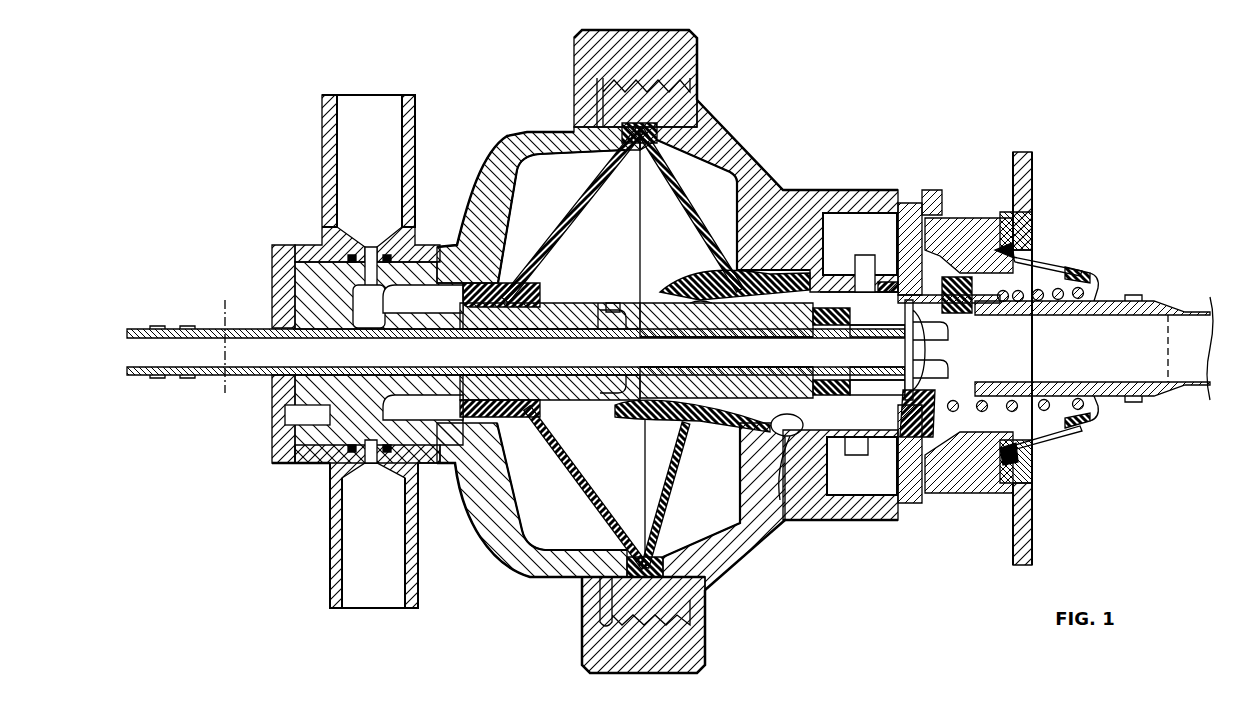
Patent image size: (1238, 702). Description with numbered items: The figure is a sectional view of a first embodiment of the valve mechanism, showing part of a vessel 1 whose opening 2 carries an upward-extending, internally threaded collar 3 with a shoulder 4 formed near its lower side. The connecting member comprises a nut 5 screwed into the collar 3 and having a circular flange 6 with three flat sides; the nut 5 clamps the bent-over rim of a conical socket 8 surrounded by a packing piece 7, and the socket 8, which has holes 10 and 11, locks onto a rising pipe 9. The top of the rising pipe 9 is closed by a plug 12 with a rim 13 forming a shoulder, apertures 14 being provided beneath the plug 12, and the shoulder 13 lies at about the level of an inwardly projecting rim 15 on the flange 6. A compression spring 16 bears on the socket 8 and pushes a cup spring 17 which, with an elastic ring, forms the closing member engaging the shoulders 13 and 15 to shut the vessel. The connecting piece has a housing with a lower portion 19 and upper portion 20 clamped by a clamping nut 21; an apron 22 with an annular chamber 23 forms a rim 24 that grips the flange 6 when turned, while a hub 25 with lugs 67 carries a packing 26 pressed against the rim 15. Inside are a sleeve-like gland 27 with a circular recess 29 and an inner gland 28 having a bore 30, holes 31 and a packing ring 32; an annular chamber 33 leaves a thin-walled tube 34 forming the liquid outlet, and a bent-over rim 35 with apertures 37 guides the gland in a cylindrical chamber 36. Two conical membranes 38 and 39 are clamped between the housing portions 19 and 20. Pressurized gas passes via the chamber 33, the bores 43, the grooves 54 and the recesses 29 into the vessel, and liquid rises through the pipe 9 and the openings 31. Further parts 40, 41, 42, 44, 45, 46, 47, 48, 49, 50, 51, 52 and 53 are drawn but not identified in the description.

The vessel 1 is at (1032, 182).
The opening 2 is at (1030, 262).
The collar 3 is at (985, 218).
The shoulder 4 is at (1030, 248).
The nut 5 is at (959, 218).
The circular flange 6 is at (929, 200).
The packing piece 7 is at (1010, 213).
The conical socket 8 is at (1086, 272).
The rising pipe 9 is at (1141, 301).
The holes 10 is at (1072, 270).
The holes 11 is at (1096, 277).
The plug 12 is at (905, 350).
The rim 13 is at (876, 330).
The apertures 14 is at (948, 324).
The inwardly projecting rim 15 is at (906, 291).
The compression spring 16 is at (1045, 291).
The cup spring 17 is at (930, 422).
The lower portion 19 is at (789, 186).
The upper portion 20 is at (504, 141).
The clamping nut 21 is at (697, 58).
The apron 22 is at (851, 190).
The annular chamber 23 is at (908, 203).
The rim 24 is at (898, 515).
The hub 25 is at (832, 275).
The packing 26 is at (886, 282).
The sleeve-like gland 27 is at (850, 396).
The gland 28 is at (750, 345).
The circular recess 29 is at (781, 337).
The bore 30 is at (569, 303).
The holes 31 is at (863, 337).
The packing ring 32 is at (817, 330).
The annular chamber 33 is at (595, 303).
The thin-walled tube 34 is at (184, 329).
The bent-over rim 35 is at (369, 306).
The cylindrical chamber 36 is at (379, 332).
The apertures 37 is at (423, 350).
The conical membrane 38 is at (600, 223).
The conical membrane 39 is at (531, 283).
The gap 40 is at (521, 330).
The inner wall 41 is at (504, 262).
The hub 42 is at (463, 289).
The bores 43 is at (613, 303).
The lower arm 44 is at (693, 429).
The lower lip 45 is at (740, 434).
The lower casing 46 is at (790, 521).
The port 47 is at (785, 456).
The lip 48 is at (720, 279).
The flange 49 is at (304, 245).
The end block 50 is at (272, 259).
The tube 51 is at (322, 141).
The bore 52 is at (371, 247).
The plug 53 is at (330, 463).
The grooves 54 is at (705, 306).
The lugs 67 is at (862, 255).